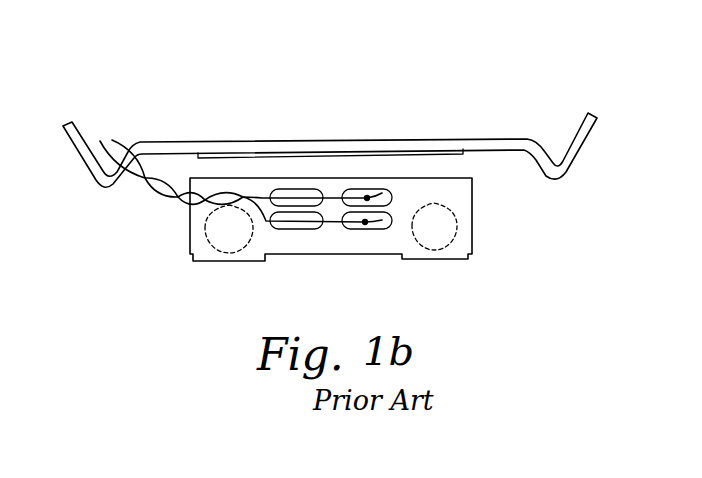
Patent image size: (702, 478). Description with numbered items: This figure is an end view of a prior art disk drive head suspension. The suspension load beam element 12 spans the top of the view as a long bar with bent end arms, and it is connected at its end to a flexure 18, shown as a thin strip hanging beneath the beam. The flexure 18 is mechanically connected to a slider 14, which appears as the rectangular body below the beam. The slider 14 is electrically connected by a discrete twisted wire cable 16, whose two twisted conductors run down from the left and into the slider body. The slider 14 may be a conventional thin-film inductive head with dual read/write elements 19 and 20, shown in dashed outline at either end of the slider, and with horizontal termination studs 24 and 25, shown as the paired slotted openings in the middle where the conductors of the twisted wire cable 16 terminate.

The suspension load beam element 12 is at (497, 138).
The slider 14 is at (472, 218).
The discrete twisted wire cable 16 is at (148, 193).
The flexure 18 is at (358, 141).
The read/write element 19 is at (231, 236).
The read/write element 20 is at (443, 236).
The horizontal termination stud 24 is at (292, 204).
The horizontal termination stud 25 is at (360, 205).